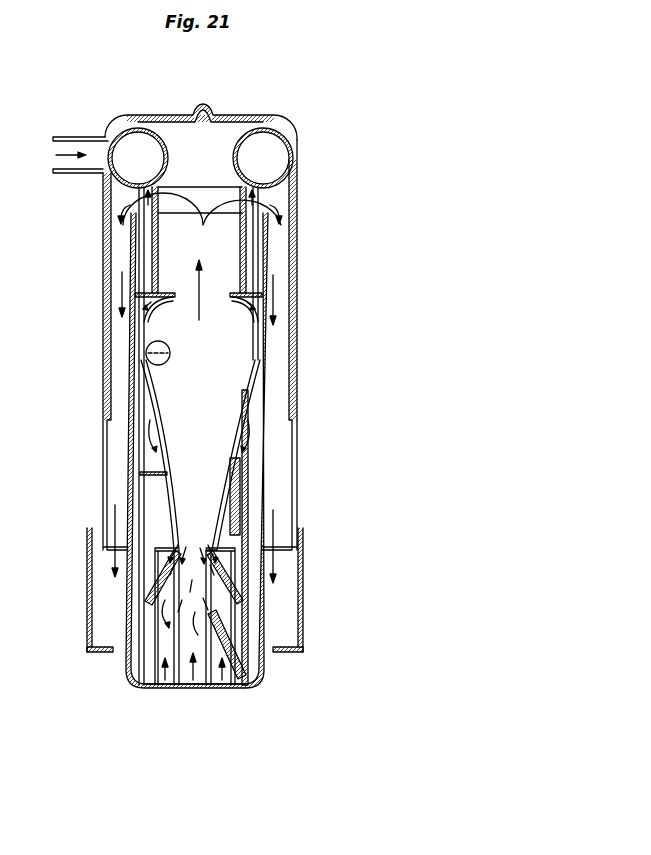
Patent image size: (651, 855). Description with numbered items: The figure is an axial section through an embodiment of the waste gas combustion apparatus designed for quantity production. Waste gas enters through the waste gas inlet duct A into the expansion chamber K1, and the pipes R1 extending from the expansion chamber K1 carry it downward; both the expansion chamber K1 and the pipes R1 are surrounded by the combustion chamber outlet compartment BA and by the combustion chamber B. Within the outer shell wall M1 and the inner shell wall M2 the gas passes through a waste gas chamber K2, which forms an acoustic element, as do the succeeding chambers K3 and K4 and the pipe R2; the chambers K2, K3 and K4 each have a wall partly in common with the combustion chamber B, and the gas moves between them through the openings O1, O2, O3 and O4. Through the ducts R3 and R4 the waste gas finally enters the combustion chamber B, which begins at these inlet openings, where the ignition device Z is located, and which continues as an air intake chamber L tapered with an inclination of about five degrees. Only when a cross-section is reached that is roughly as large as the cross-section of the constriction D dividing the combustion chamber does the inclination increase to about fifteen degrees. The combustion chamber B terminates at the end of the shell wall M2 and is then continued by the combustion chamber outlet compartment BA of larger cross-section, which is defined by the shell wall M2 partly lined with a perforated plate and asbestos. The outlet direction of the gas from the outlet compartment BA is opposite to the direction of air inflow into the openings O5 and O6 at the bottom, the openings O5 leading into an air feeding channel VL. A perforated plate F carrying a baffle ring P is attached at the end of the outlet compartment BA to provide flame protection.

The combustion chamber outlet compartment BA is at (280, 192).
The expansion chamber K1 is at (290, 152).
The waste gas inlet duct A is at (92, 164).
The shell wall M1 is at (299, 207).
The shell wall M2 is at (268, 234).
The combustion chamber B is at (224, 248).
The pipes R1 is at (133, 253).
The constriction D is at (213, 297).
The opening O1 is at (154, 300).
The ignition device Z is at (146, 352).
The waste gas chamber K2 is at (256, 385).
The opening O2 is at (140, 440).
The chamber K3 is at (238, 453).
The pipe R2 is at (244, 498).
The opening O3 is at (193, 567).
The duct R3 is at (156, 587).
The chamber K4 is at (238, 568).
The perforated plate F is at (303, 593).
The air intake chamber L is at (197, 633).
The duct R4 is at (216, 627).
The opening O4 is at (183, 619).
The air feeding channel VL is at (218, 656).
The baffle ring P is at (102, 654).
The openings O5 is at (163, 688).
The opening O6 is at (192, 690).